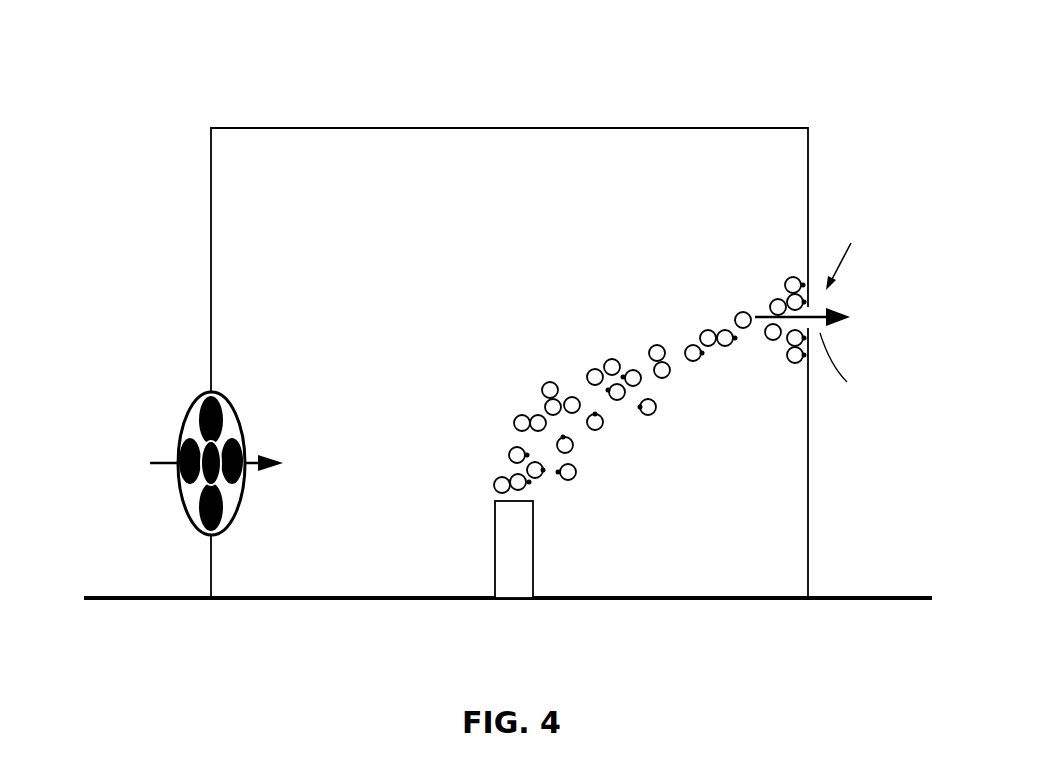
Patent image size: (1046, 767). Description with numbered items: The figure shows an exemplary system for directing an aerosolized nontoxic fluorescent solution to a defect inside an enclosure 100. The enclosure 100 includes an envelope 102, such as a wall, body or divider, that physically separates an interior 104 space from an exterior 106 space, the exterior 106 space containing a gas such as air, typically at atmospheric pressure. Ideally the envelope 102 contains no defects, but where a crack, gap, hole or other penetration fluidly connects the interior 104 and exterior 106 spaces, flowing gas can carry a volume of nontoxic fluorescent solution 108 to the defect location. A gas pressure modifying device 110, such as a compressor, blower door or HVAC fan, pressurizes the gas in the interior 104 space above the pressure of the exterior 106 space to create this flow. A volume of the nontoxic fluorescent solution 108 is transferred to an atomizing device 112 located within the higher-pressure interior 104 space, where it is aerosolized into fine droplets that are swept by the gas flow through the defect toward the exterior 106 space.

The enclosure 100 is at (144, 97).
The envelope 102 is at (483, 128).
The interior space 104 is at (341, 243).
The exterior space 106 is at (851, 305).
The nontoxic fluorescent solution 108 is at (590, 375).
The gas pressure modifying device 110 is at (182, 500).
The atomizing device 112 is at (495, 548).